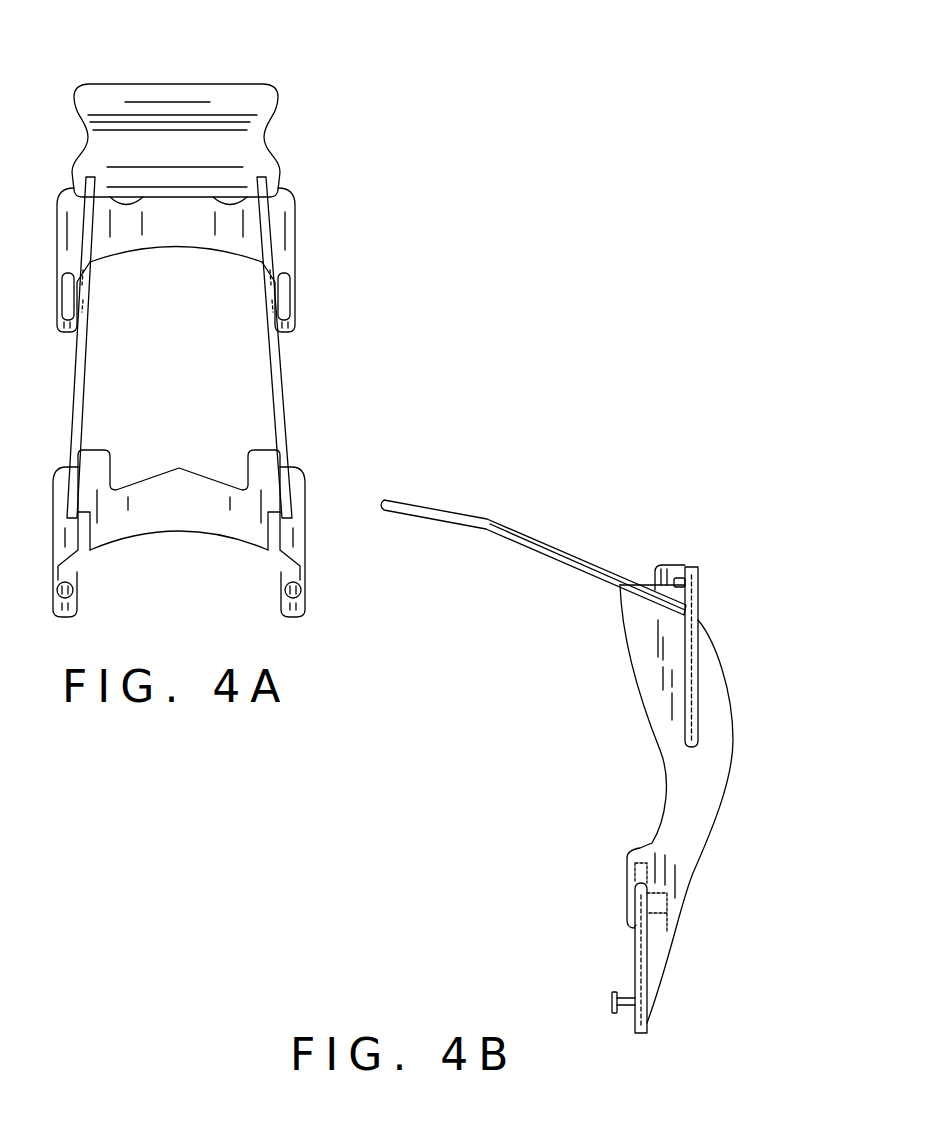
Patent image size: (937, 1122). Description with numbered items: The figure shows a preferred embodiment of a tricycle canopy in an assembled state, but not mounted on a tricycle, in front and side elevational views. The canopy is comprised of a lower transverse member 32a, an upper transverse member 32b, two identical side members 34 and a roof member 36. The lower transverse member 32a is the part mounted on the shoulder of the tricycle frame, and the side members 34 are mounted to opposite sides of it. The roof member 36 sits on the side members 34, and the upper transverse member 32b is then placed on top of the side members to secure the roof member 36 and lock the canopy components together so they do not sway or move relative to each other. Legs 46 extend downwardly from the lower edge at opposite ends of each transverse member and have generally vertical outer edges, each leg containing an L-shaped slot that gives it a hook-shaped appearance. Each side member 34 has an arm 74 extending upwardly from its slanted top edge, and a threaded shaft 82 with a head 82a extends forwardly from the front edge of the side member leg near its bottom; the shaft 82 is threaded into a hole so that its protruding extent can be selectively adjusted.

In FIG. 4A, the roof member 36 is at (160, 82).
In FIG. 4B, the roof member 36 is at (493, 523).
In FIG. 4A, the lower transverse member 32a is at (306, 526).
In FIG. 4B, the lower transverse member 32a is at (635, 948).
In FIG. 4A, the upper transverse member 32b is at (300, 243).
In FIG. 4B, the upper transverse member 32b is at (688, 568).
In FIG. 4A, the side member 34 is at (84, 402).
In FIG. 4B, the side member 34 is at (720, 803).
In FIG. 4A, the leg 46 is at (56, 296).
In FIG. 4B, the arm 74 is at (657, 569).
In FIG. 4B, the threaded shaft 82 is at (623, 1010).
In FIG. 4B, the head 82a is at (612, 1000).